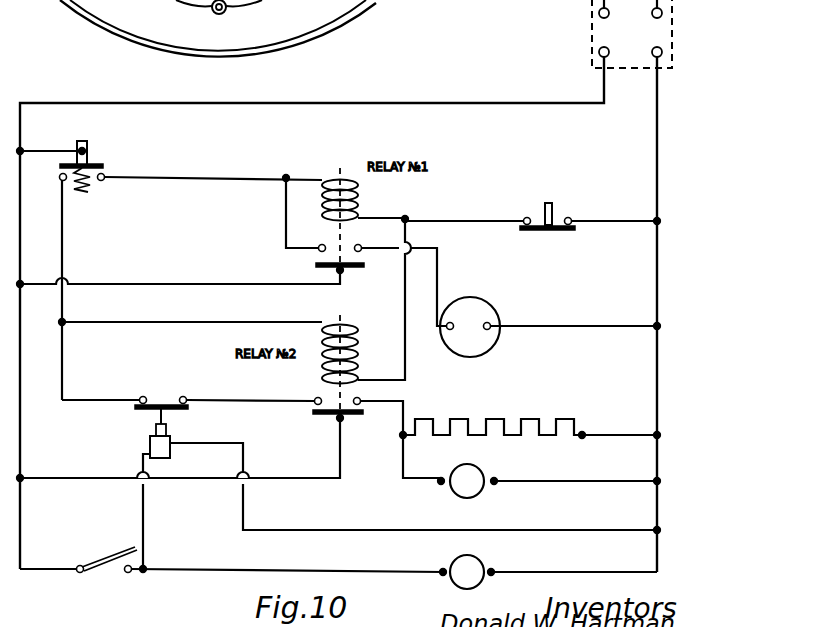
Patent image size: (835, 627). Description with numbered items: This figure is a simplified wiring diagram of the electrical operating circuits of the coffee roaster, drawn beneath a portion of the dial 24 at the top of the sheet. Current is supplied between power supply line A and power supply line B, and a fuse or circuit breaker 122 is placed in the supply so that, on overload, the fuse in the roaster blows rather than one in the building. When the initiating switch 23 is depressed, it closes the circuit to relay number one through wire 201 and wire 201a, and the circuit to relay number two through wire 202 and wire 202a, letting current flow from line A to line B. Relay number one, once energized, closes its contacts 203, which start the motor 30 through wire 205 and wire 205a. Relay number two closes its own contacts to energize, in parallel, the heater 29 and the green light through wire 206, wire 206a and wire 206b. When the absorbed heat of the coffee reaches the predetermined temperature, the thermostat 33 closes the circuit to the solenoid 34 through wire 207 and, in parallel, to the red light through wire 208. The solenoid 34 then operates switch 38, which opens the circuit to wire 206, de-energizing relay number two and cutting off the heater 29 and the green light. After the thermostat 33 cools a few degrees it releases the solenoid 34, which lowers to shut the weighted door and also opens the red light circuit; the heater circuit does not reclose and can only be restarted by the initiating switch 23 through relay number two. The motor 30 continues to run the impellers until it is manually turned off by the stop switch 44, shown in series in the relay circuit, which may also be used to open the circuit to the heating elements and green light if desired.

The timer dial 24 is at (352, 0).
The fuse or circuit breaker 122 is at (663, 13).
The power supply line A is at (477, 101).
The power supply line B is at (658, 108).
The initiating switch 23 is at (88, 153).
The wire 201 is at (230, 173).
The wire 201a is at (453, 225).
The contacts 203 is at (353, 278).
The wire 205 is at (185, 276).
The stop switch 44 is at (535, 231).
The wire 202a is at (380, 300).
The motor 30 is at (472, 298).
The wire 205a is at (558, 318).
The wire 202 is at (210, 314).
The switch 38 is at (134, 408).
The wire 206 is at (264, 393).
The solenoid 34 is at (172, 456).
The heater 29 is at (548, 418).
The wire 206a is at (583, 430).
The wire 206b is at (583, 470).
The wire 207 is at (145, 508).
The thermostat 33 is at (96, 565).
The wire 208 is at (286, 570).